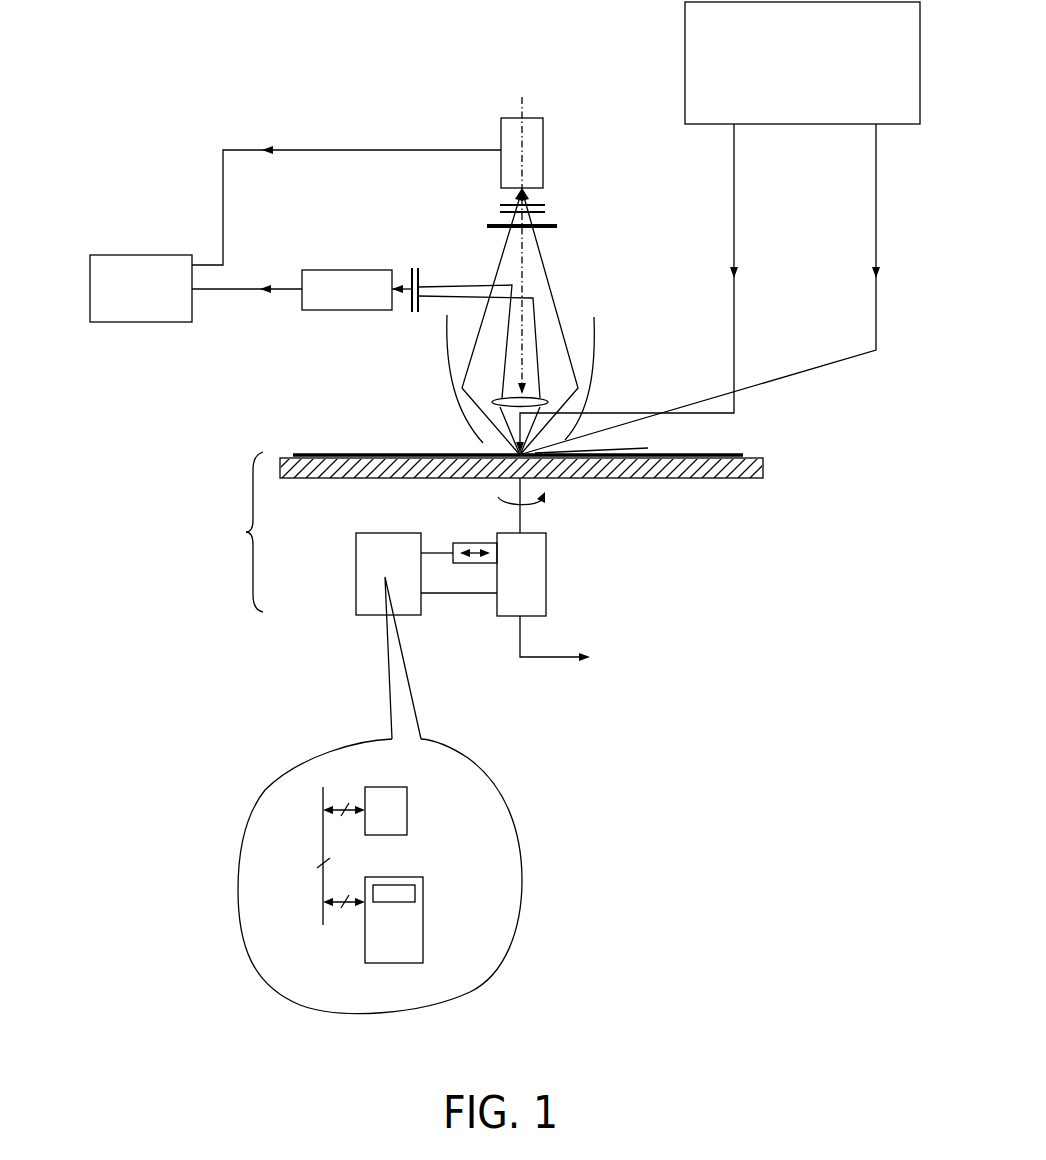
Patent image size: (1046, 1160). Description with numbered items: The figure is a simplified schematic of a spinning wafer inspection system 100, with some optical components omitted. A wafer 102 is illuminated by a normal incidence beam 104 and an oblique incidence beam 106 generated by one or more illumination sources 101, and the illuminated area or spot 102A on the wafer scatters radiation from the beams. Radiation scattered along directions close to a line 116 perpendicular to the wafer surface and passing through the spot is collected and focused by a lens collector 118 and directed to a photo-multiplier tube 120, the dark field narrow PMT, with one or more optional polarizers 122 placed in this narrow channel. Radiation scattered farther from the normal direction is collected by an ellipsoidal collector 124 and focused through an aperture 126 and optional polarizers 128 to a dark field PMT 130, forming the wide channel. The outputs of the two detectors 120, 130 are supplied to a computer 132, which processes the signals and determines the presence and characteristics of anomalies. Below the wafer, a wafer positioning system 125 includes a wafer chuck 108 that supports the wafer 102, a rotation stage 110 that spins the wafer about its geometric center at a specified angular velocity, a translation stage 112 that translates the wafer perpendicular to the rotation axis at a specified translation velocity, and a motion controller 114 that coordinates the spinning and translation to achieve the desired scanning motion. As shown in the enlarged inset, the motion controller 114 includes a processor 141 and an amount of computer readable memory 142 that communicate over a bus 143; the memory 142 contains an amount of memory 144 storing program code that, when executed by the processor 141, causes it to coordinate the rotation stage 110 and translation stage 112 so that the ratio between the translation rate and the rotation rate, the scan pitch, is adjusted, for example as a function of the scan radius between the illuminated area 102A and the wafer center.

The wafer inspection system 100 is at (141, 126).
The illumination source 101 is at (802, 63).
The wafer 102 is at (400, 454).
The illuminated area or spot 102A is at (622, 442).
The normal incidence beam 104 is at (737, 161).
The oblique incidence beam 106 is at (878, 163).
The wafer chuck 108 is at (637, 480).
The rotation stage 110 is at (548, 578).
The translation stage 112 is at (478, 543).
The motion controller 114 is at (393, 533).
The line perpendicular to the wafer surface 116 is at (525, 100).
The lens collector 118 is at (552, 291).
The photo-multiplier tube 120 is at (330, 270).
The polarizer 122 is at (413, 315).
The ellipsoidal collector 124 is at (597, 336).
The wafer positioning system 125 is at (243, 532).
The aperture 126 is at (558, 228).
The polarizer 128 is at (548, 208).
The dark field PMT 130 is at (545, 162).
The computer 132 is at (145, 255).
The processor 141 is at (407, 810).
The computer readable memory 142 is at (365, 942).
The bus 143 is at (323, 838).
The memory storing program code 144 is at (415, 891).